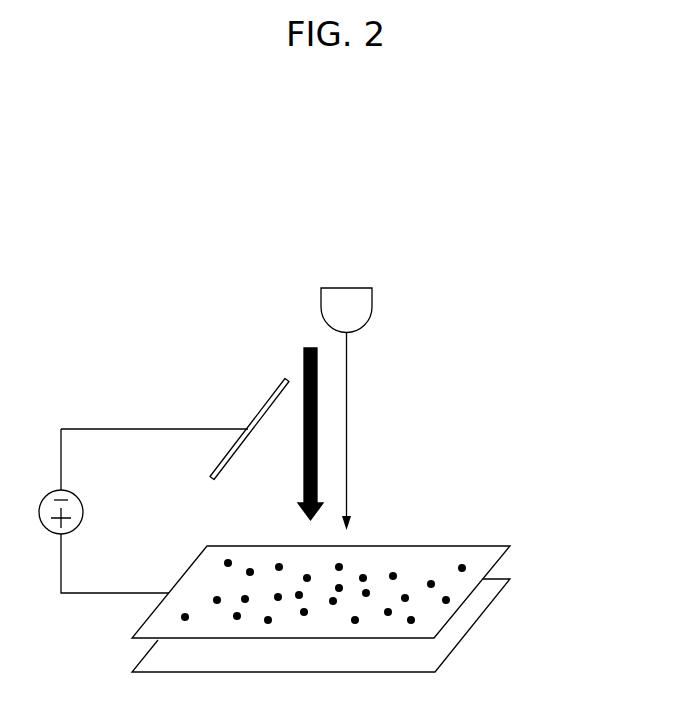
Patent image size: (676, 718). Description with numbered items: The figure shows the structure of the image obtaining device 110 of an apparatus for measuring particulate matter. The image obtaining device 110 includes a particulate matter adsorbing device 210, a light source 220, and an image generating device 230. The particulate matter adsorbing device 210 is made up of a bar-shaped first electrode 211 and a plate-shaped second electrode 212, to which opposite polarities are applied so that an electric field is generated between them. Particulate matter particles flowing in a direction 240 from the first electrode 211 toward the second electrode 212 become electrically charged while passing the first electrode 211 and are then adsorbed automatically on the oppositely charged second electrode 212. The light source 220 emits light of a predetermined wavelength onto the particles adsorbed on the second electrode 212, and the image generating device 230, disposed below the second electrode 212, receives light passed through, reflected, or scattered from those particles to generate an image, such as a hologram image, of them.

The image obtaining device 110 is at (461, 241).
The particulate matter adsorbing device 210 is at (238, 373).
The first electrode 211 is at (264, 408).
The second electrode 212 is at (186, 570).
The light source 220 is at (355, 288).
The image generating device 230 is at (472, 625).
The direction 240 is at (302, 365).